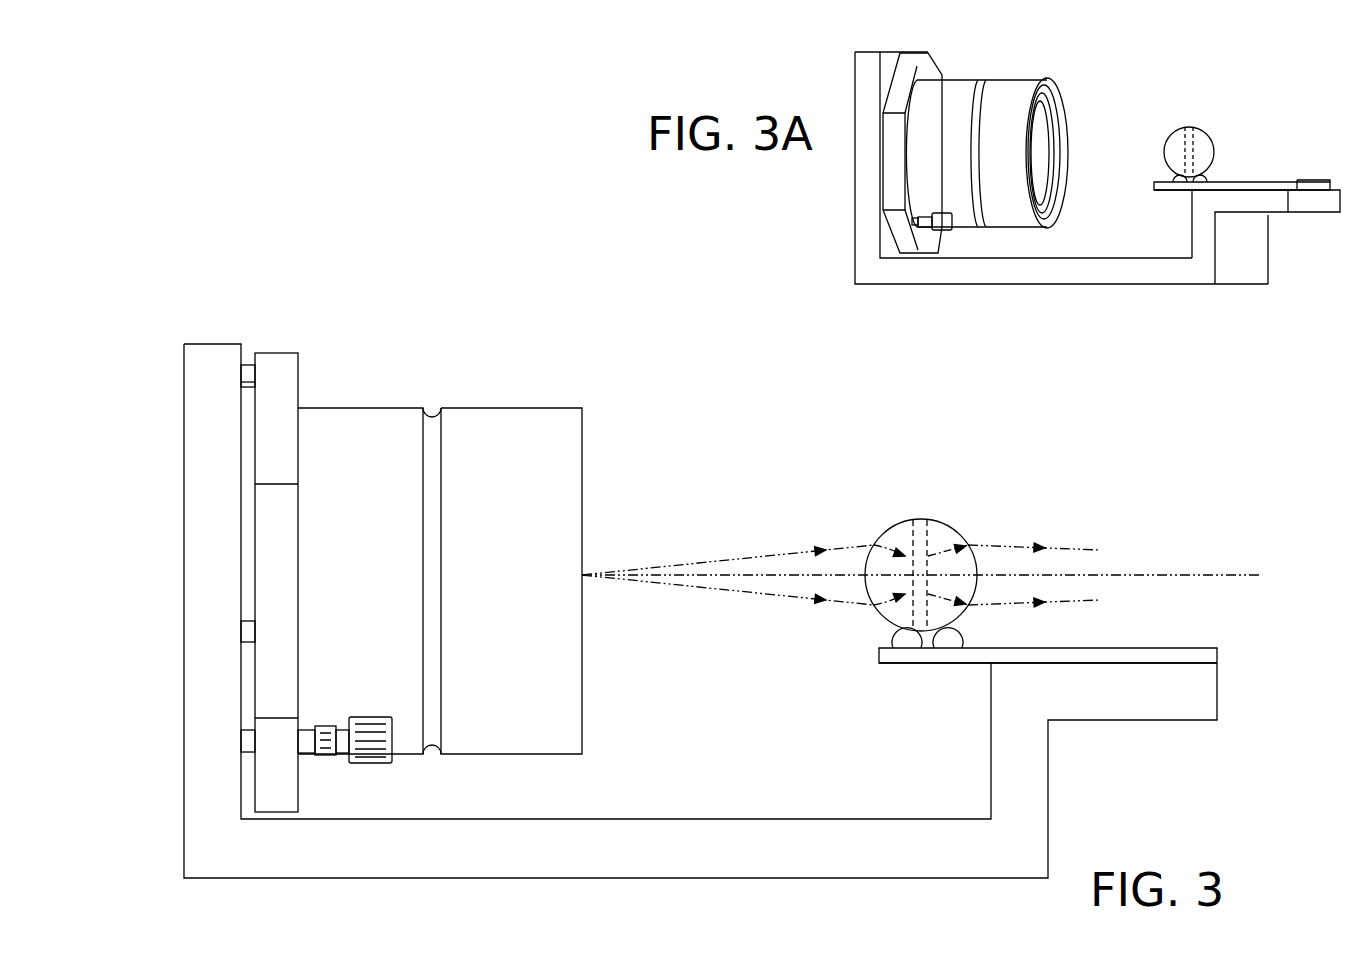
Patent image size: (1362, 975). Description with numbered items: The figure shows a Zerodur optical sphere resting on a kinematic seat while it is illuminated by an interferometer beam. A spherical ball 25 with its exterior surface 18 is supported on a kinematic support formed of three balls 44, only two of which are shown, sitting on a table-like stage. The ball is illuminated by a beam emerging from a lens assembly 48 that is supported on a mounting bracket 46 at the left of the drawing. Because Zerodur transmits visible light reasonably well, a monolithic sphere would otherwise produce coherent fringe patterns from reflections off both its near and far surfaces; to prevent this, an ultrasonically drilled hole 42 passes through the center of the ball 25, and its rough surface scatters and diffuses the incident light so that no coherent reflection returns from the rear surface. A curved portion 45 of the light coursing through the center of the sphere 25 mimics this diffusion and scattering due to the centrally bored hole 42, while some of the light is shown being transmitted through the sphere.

In FIG. 3, the exterior surface 18 is at (952, 528).
In FIG. 3, the spherical ball 25 is at (940, 530).
In FIG. 3A, the spherical ball 25 is at (1199, 146).
In FIG. 3, the ultrasonically drilled hole 42 is at (903, 552).
In FIG. 3, the balls 44 is at (960, 640).
In FIG. 3A, the balls 44 is at (1204, 178).
In FIG. 3, the curved portion 45 is at (890, 547).
In FIG. 3, the mounting bracket 46 is at (218, 343).
In FIG. 3A, the mounting bracket 46 is at (863, 52).
In FIG. 3, the lens assembly 48 is at (498, 408).
In FIG. 3A, the lens assembly 48 is at (1008, 78).